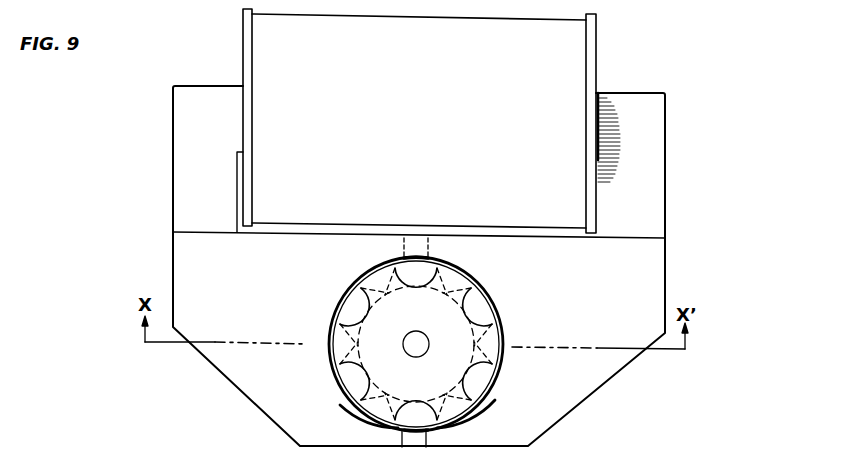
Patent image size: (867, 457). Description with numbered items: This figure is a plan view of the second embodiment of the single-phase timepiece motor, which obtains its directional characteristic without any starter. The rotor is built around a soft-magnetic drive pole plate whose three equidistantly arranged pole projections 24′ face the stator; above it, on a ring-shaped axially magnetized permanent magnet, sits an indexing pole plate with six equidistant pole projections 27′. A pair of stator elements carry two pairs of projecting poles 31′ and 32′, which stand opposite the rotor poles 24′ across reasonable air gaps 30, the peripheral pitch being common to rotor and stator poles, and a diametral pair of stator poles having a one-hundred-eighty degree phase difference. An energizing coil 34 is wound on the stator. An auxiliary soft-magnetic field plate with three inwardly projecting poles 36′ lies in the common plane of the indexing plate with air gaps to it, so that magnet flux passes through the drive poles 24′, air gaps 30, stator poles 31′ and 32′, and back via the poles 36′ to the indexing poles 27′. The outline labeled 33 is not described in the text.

The pole projections 24′ is at (445, 420).
The pole projections 27′ is at (416, 343).
The air gaps 30 is at (362, 409).
The projecting poles 31′ is at (367, 268).
The projecting poles 32′ is at (438, 266).
The housing 33 is at (645, 143).
The energizing coil 34 is at (568, 55).
The inwardly projecting poles 36′ is at (462, 274).